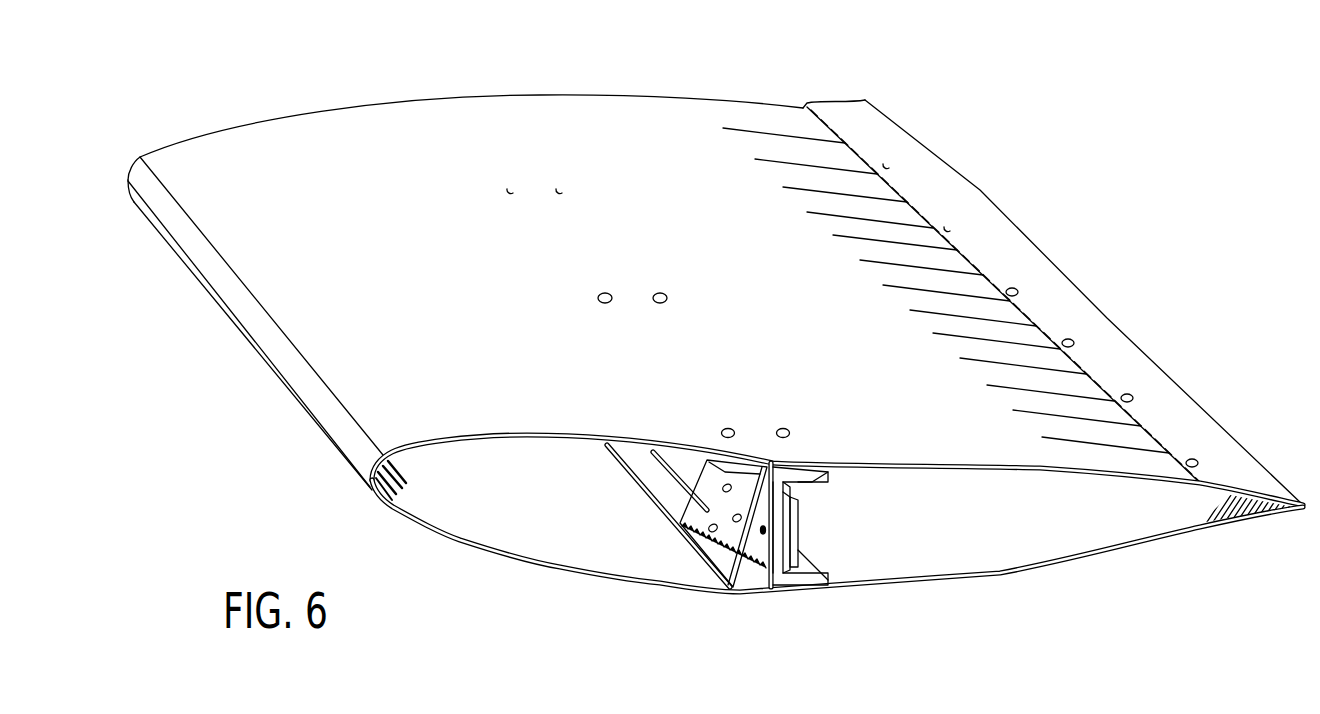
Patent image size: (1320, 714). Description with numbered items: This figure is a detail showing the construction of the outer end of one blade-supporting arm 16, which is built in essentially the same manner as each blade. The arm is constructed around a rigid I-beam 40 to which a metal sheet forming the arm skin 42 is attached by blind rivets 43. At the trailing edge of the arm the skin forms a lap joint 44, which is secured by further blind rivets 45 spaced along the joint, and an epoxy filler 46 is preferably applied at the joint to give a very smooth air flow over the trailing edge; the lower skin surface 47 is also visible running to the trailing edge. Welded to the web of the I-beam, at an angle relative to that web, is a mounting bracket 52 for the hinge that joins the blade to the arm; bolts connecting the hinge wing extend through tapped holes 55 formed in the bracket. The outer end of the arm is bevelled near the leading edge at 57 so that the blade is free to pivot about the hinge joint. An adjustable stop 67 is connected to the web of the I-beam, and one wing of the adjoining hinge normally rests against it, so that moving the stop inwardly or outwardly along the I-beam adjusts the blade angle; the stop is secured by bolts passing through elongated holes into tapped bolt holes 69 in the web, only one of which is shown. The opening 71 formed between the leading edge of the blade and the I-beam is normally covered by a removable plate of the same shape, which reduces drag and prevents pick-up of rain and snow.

The blade-supporting arm 16 is at (1060, 290).
The I-beam 40 is at (775, 581).
The arm skin 42 is at (940, 462).
The blind rivets 43 is at (779, 428).
The lap joint 44 is at (938, 198).
The blind rivets 45 is at (1134, 398).
The epoxy filler 46 is at (1010, 335).
The lower skin 47 is at (1088, 560).
The mounting bracket 52 is at (743, 557).
The tapped holes 55 is at (732, 518).
The bevel 57 is at (527, 434).
The adjustable stop 67 is at (802, 508).
The bolt holes 69 is at (774, 543).
The opening 71 is at (515, 523).